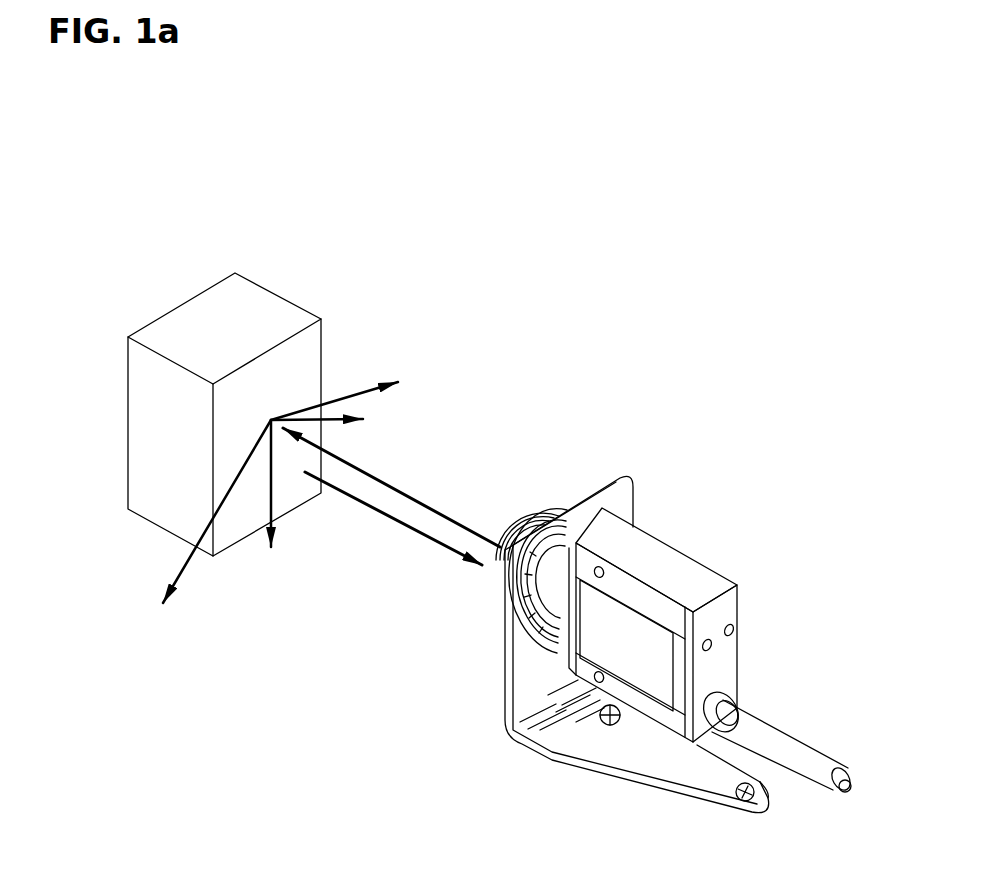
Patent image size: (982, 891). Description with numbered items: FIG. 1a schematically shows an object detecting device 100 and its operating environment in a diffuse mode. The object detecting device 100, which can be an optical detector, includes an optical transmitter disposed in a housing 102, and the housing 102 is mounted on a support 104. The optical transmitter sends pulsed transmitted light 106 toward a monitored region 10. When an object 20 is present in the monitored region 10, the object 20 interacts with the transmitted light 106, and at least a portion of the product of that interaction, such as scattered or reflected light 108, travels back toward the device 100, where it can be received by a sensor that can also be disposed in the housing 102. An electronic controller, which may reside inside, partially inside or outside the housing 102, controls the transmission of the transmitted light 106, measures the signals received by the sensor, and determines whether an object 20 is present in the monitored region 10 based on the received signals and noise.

The monitored region 10 is at (121, 275).
The object 20 is at (272, 292).
The object detecting device 100 is at (714, 238).
The housing 102 is at (680, 550).
The support 104 is at (625, 775).
The transmitted light 106 is at (418, 497).
The scattered or reflected light 108 is at (380, 515).